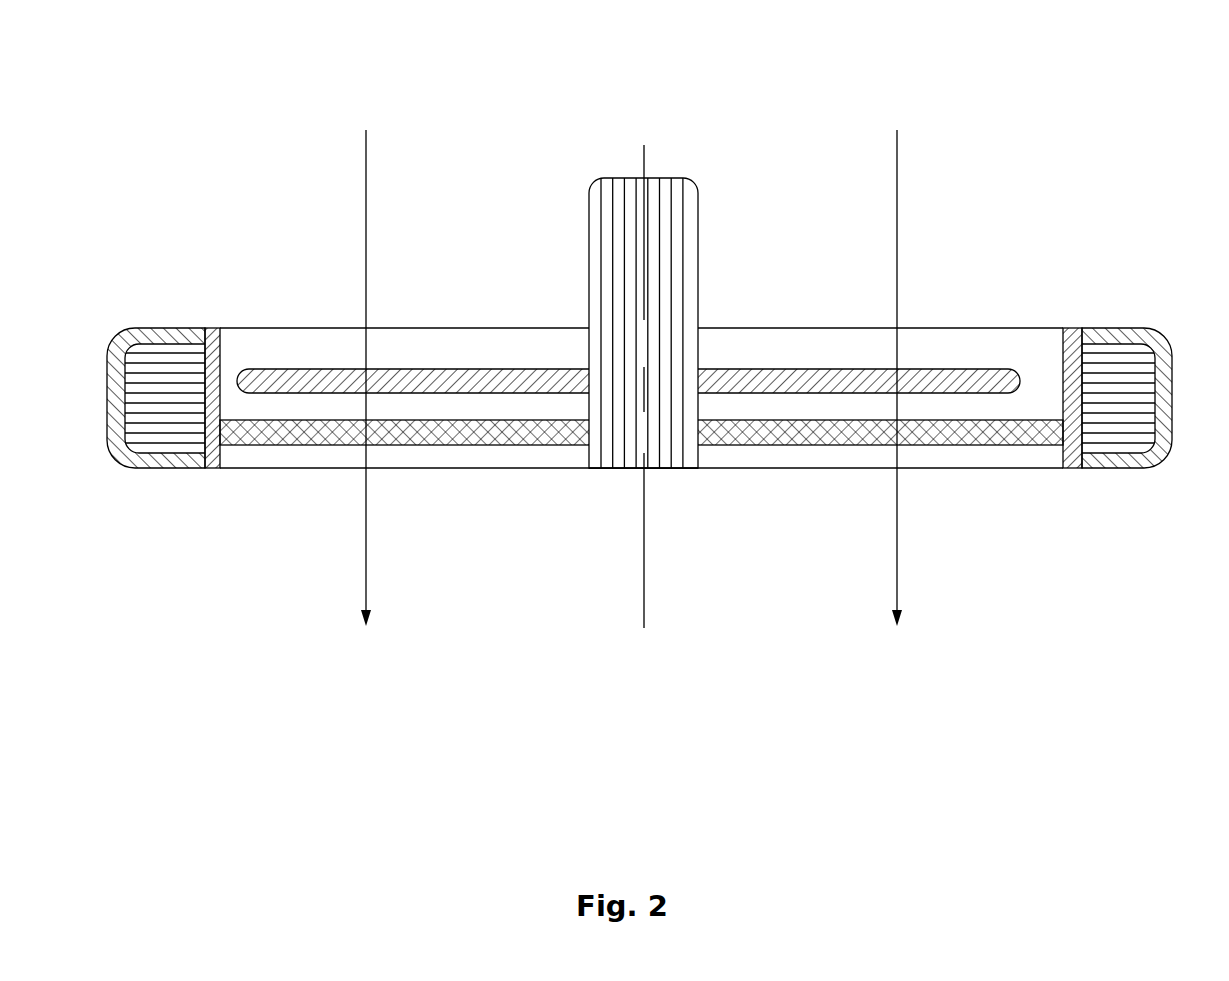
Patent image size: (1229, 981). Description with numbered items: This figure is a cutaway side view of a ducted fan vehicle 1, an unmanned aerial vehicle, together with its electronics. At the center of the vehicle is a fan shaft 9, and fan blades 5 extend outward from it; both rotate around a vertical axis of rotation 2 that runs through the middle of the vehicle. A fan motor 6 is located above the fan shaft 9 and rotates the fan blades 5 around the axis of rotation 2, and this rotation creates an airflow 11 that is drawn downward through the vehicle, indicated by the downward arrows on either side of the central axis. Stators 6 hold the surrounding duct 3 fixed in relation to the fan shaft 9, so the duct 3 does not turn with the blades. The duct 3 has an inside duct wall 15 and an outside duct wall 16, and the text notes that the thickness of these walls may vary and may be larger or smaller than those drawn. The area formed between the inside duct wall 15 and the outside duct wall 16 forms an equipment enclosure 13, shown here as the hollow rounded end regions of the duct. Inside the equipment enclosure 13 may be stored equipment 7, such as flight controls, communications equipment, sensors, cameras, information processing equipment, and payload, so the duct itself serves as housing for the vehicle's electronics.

The ducted fan vehicle 1 is at (214, 98).
The axis of rotation 2 is at (645, 600).
The duct 3 is at (1029, 328).
The fan blades 5 is at (470, 393).
The fan motor 6 is at (600, 180).
The equipment 7 is at (1132, 393).
The fan shaft 9 is at (700, 455).
The airflow 11 is at (896, 183).
The equipment enclosure 13 is at (165, 352).
The inside duct wall 15 is at (207, 350).
The outside duct wall 16 is at (1147, 467).